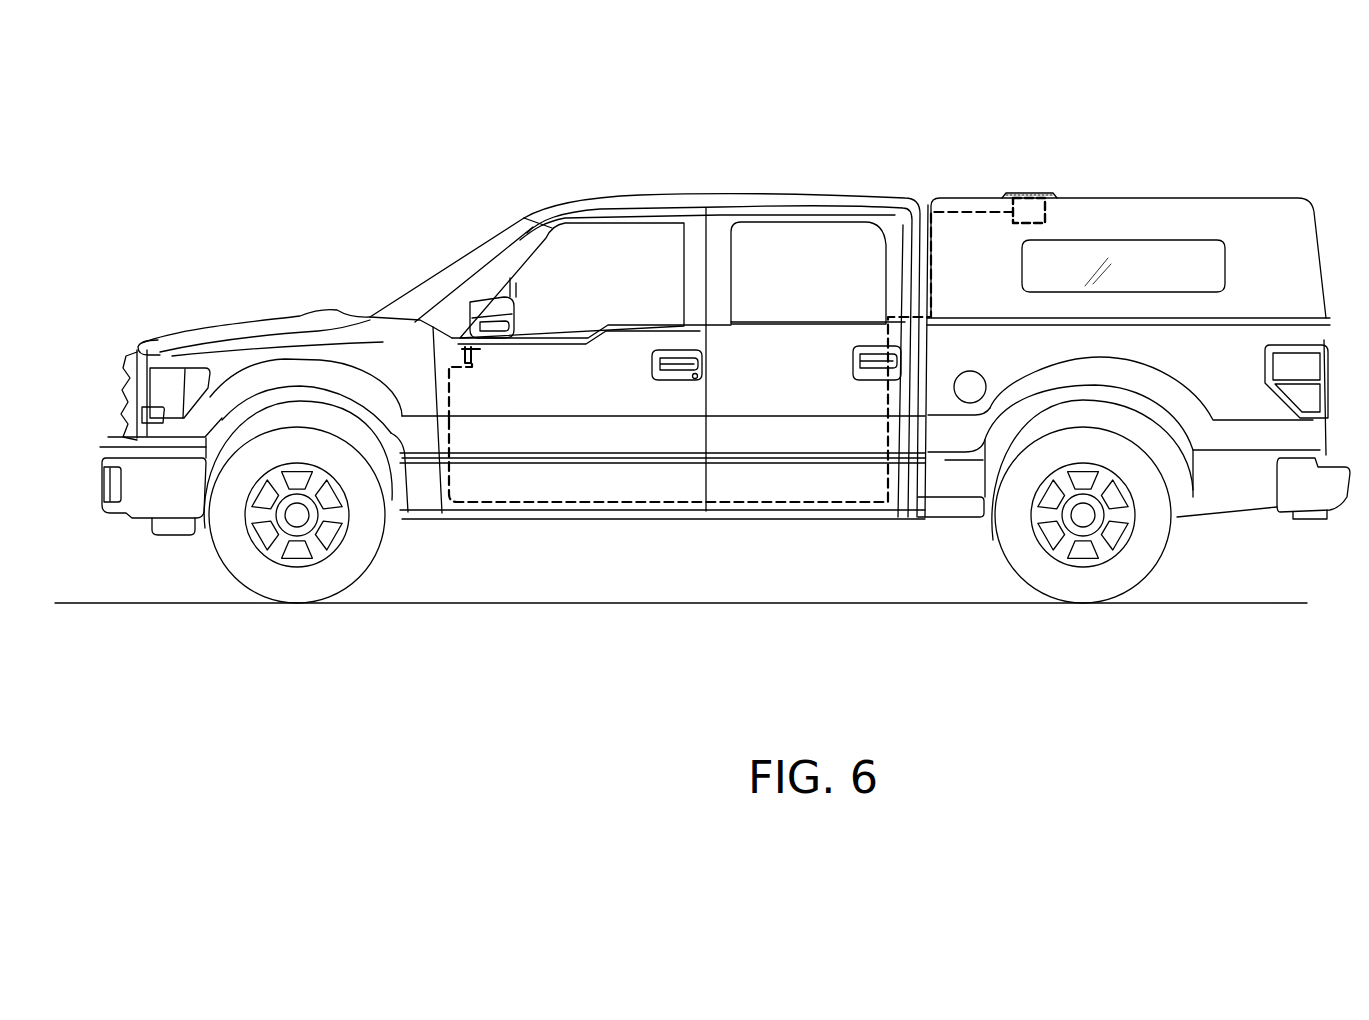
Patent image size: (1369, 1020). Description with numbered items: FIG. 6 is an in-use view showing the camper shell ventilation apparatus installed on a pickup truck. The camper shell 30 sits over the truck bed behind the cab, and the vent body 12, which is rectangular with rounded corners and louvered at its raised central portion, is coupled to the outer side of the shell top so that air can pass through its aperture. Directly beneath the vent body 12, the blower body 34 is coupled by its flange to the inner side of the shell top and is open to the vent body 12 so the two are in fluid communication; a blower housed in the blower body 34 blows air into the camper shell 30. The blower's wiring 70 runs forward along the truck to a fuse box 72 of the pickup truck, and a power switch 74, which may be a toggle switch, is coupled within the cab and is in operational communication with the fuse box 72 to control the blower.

The vent body 12 is at (1019, 192).
The camper shell 30 is at (1237, 207).
The blower body 34 is at (1047, 211).
The wiring 70 is at (587, 502).
The fuse box 72 is at (448, 382).
The power switch 74 is at (467, 351).